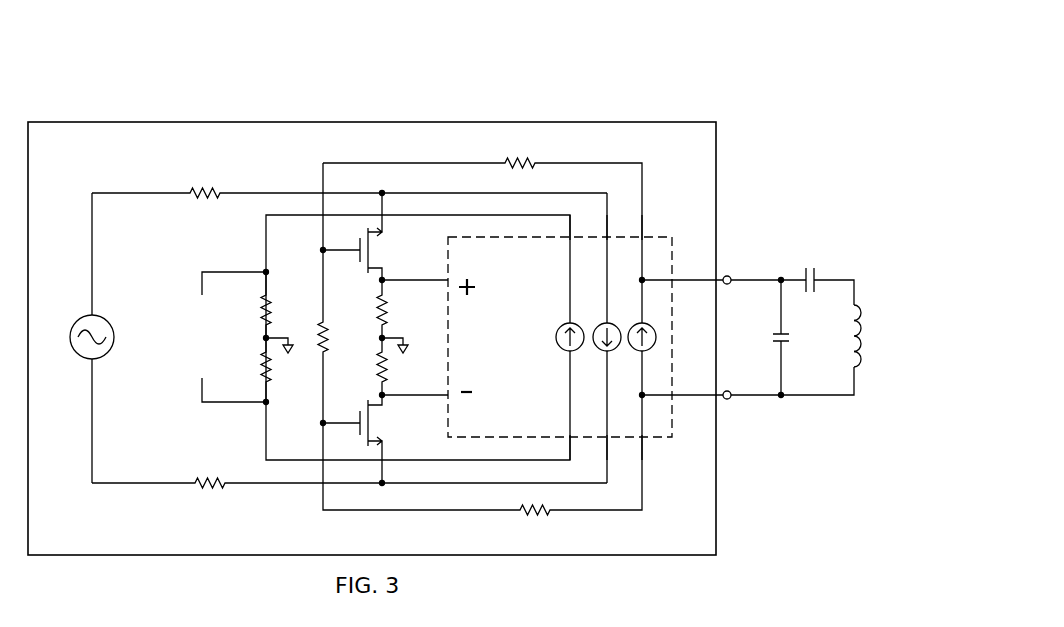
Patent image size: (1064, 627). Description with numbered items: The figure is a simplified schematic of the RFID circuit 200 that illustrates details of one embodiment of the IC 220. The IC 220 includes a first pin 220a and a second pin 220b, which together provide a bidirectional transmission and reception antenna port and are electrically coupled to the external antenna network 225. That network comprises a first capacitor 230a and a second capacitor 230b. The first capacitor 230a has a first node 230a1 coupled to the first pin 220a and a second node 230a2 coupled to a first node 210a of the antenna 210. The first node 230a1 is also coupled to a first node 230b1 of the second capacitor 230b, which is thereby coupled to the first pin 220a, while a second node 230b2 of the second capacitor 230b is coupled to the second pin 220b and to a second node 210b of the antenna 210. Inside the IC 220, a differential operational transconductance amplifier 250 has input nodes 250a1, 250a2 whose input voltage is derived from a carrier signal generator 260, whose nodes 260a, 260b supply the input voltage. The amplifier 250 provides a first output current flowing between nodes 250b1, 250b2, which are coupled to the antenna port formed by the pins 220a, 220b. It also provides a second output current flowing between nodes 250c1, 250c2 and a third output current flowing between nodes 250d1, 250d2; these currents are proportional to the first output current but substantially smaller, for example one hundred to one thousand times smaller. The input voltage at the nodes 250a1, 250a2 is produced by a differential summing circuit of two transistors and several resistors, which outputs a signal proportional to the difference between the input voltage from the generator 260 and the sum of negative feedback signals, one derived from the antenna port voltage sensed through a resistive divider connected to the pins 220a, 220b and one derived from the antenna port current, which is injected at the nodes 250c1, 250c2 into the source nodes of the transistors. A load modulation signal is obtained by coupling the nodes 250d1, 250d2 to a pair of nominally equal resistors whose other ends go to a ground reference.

The RFID circuit 200 is at (738, 42).
The IC 220 is at (692, 143).
The first pin 220a is at (721, 271).
The second pin 220b is at (721, 404).
The antenna matching network 225 is at (850, 424).
The first capacitor 230a is at (815, 274).
The first node of first capacitor 230a1 is at (768, 272).
The second node of first capacitor 230a2 is at (844, 284).
The second capacitor 230b is at (762, 335).
The first node of second capacitor 230b1 is at (799, 307).
The second node of second capacitor 230b2 is at (799, 368).
The antenna 210 is at (878, 334).
The first node of antenna 210a is at (864, 305).
The second node of antenna 210b is at (861, 374).
The differential operational transconductance amplifier 250 is at (534, 290).
The input node of OTA 250a1 is at (434, 270).
The input node of OTA 250a2 is at (434, 403).
The first output current node 250b1 is at (646, 227).
The first output current node 250b2 is at (646, 447).
The second output current node 250c1 is at (603, 227).
The second output current node 250c2 is at (603, 447).
The third output current node 250d1 is at (550, 227).
The third output current node 250d2 is at (550, 447).
The carrier signal generator 260 is at (79, 338).
The node of input voltage generator 260a is at (108, 254).
The node of input voltage generator 260b is at (108, 421).